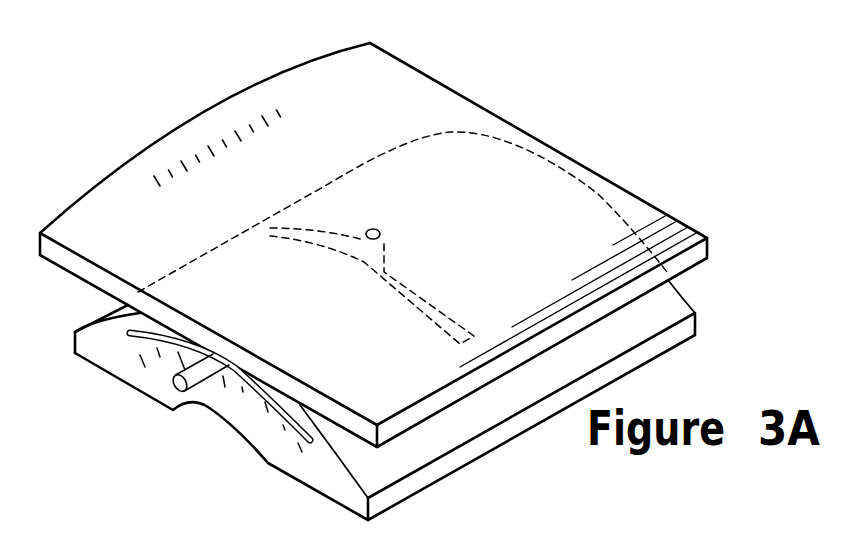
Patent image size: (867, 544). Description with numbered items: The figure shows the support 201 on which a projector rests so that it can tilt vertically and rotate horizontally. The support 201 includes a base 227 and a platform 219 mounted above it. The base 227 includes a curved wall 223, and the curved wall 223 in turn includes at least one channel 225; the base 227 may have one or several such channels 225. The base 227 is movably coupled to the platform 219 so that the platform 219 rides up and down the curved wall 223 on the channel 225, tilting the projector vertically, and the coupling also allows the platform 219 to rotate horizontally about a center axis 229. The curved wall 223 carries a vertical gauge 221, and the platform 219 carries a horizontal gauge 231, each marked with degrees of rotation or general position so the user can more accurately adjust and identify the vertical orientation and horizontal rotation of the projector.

The support 201 is at (637, 147).
The platform 219 is at (88, 215).
The vertical gauge 221 is at (135, 358).
The curved wall 223 is at (342, 468).
The channel 225 is at (442, 302).
The base 227 is at (488, 452).
The center axis 229 is at (380, 231).
The horizontal gauge 231 is at (293, 104).